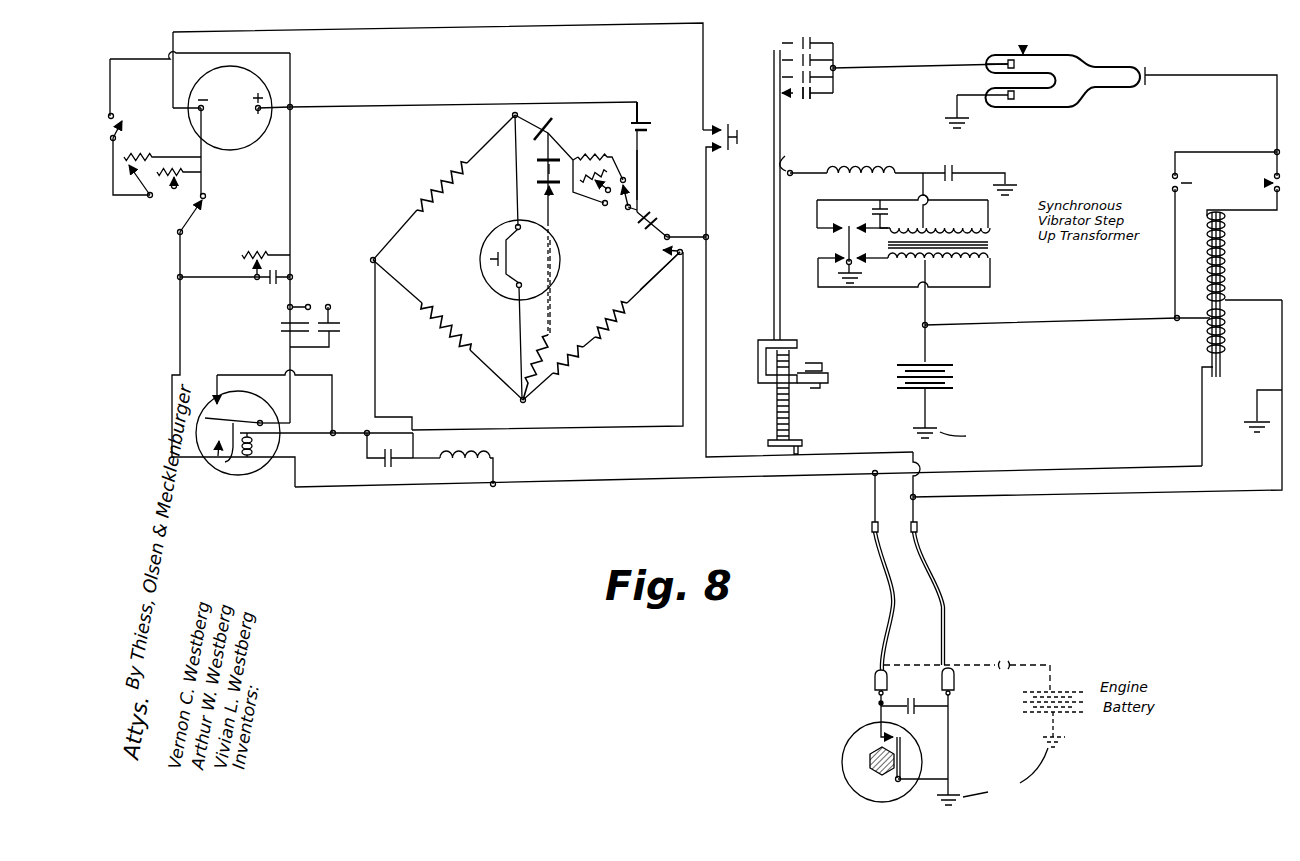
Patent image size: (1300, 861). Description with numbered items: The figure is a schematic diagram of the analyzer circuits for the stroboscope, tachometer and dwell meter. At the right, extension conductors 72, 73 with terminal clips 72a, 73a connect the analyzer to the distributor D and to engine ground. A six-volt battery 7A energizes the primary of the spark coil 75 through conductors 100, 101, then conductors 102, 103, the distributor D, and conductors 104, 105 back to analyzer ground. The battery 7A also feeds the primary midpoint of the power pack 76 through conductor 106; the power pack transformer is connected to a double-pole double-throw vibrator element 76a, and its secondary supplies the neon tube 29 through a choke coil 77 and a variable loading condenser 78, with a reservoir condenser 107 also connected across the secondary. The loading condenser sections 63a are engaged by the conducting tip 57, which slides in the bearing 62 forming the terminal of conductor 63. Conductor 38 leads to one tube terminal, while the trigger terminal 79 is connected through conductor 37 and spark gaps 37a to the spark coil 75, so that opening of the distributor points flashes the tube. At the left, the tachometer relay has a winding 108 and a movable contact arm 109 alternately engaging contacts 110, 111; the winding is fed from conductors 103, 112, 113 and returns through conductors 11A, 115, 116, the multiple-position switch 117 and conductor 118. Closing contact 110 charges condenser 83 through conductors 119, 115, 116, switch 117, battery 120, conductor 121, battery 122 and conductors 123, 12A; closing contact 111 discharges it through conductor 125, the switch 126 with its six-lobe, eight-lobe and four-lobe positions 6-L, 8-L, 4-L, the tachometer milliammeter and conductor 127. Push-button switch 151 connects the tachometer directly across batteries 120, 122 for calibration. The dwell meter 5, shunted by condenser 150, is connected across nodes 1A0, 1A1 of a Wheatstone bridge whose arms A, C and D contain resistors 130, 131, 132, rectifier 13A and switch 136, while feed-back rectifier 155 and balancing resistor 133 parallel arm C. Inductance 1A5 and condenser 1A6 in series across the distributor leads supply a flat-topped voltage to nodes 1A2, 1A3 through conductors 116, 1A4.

The bridge arm A is at (272, 82).
The conductor 127 is at (258, 114).
The six-cylinder selector terminal 6-L is at (162, 184).
The eight-cylinder selector terminal 8-L is at (179, 188).
The four-cylinder selector terminal 4-L is at (213, 159).
The multiple-position switch 126 is at (184, 228).
The conductor 12A is at (292, 203).
The conductor 123 is at (425, 103).
The conductor 125 is at (180, 325).
The condenser 83 is at (284, 324).
The conductor 119 is at (264, 374).
The relay contact 110 is at (214, 389).
The relay contact 111 is at (212, 447).
The movable contact arm 109 is at (220, 462).
The relay winding 108 is at (248, 456).
The conductor 11A is at (300, 433).
The conductor 115 is at (349, 432).
The conductor 1A4 is at (373, 356).
The condenser 1A6 is at (378, 463).
The inductance 1A5 is at (492, 455).
The conductor 113 is at (378, 488).
The conductor 112 is at (600, 481).
The conductor 116 is at (682, 364).
The bridge node 1A2 is at (370, 262).
The bridge node 1A0 is at (512, 116).
The bridge node 1A1 is at (525, 403).
The multiple-position switch 117 is at (675, 253).
The bridge node 1A3 is at (668, 271).
The resistor 130 is at (433, 189).
The resistor 131 is at (465, 352).
The balancing resistor 133 is at (556, 340).
The resistor 132 is at (563, 372).
The bridge arm C is at (637, 296).
The dwell meter 5 is at (480, 261).
The condenser 150 is at (495, 276).
The rectifier element 13A is at (555, 127).
The rectifier element 155 is at (545, 170).
The multiple-position switch 136 is at (626, 210).
The battery 122 is at (630, 123).
The conductor 121 is at (639, 160).
The battery 120 is at (640, 228).
The conductor 118 is at (707, 319).
The push-button switch 151 is at (730, 124).
The tip extension 57 is at (773, 196).
The capacitor bank 63a is at (812, 58).
The variable condenser 78 is at (809, 97).
The conductor 38 is at (905, 67).
The bearing 62 is at (791, 160).
The conductor 63 is at (811, 171).
The choke coil 77 is at (895, 167).
The condenser 107 is at (958, 167).
The power pack 76 is at (998, 245).
The vibrator element 76a is at (846, 254).
The conductor 106 is at (927, 304).
The conductor 100 is at (927, 343).
The conductor 101 is at (1047, 322).
The six-volt battery 7A is at (895, 375).
The neon flash tube 29 is at (1070, 63).
The trigger terminal 79 is at (1150, 64).
The conductor 37 is at (1227, 77).
The spark gaps 37a is at (1226, 222).
The spark coil 75 is at (1228, 258).
The conductor 105 is at (1255, 391).
The conductor 102 is at (1062, 469).
The conductor 104 is at (1168, 493).
The conductor 103 is at (872, 492).
The extension conductor 72 is at (890, 593).
The extension conductor 73 is at (945, 597).
The terminal clip 72a is at (874, 683).
The terminal clip 73a is at (955, 683).
The distributor D is at (840, 755).